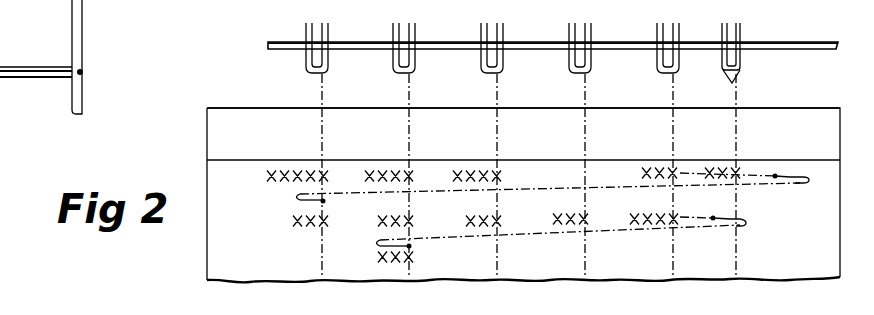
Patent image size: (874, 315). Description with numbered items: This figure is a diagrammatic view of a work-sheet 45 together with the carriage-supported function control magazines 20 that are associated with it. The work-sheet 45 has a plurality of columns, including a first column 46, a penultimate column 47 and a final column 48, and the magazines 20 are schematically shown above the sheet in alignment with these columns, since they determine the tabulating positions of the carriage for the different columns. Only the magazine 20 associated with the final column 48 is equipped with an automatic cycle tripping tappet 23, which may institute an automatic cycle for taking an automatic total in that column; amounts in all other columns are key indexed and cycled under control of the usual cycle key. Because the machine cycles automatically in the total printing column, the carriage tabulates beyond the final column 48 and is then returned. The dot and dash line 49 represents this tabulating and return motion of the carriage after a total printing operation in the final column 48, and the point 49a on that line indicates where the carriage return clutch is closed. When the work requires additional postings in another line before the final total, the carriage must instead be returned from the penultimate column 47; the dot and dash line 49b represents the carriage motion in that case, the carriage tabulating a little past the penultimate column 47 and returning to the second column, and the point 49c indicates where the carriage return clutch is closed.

The function control magazine 20 is at (327, 33).
The automatic cycle tripping tappet 23 is at (725, 79).
The work-sheet 45 is at (214, 173).
The first column 46 is at (271, 109).
The penultimate column 47 is at (617, 109).
The final column 48 is at (722, 113).
The dot and dash line 49 is at (520, 190).
The point 49a is at (776, 175).
The dot and dash line 49b is at (531, 232).
The point 49c is at (713, 218).